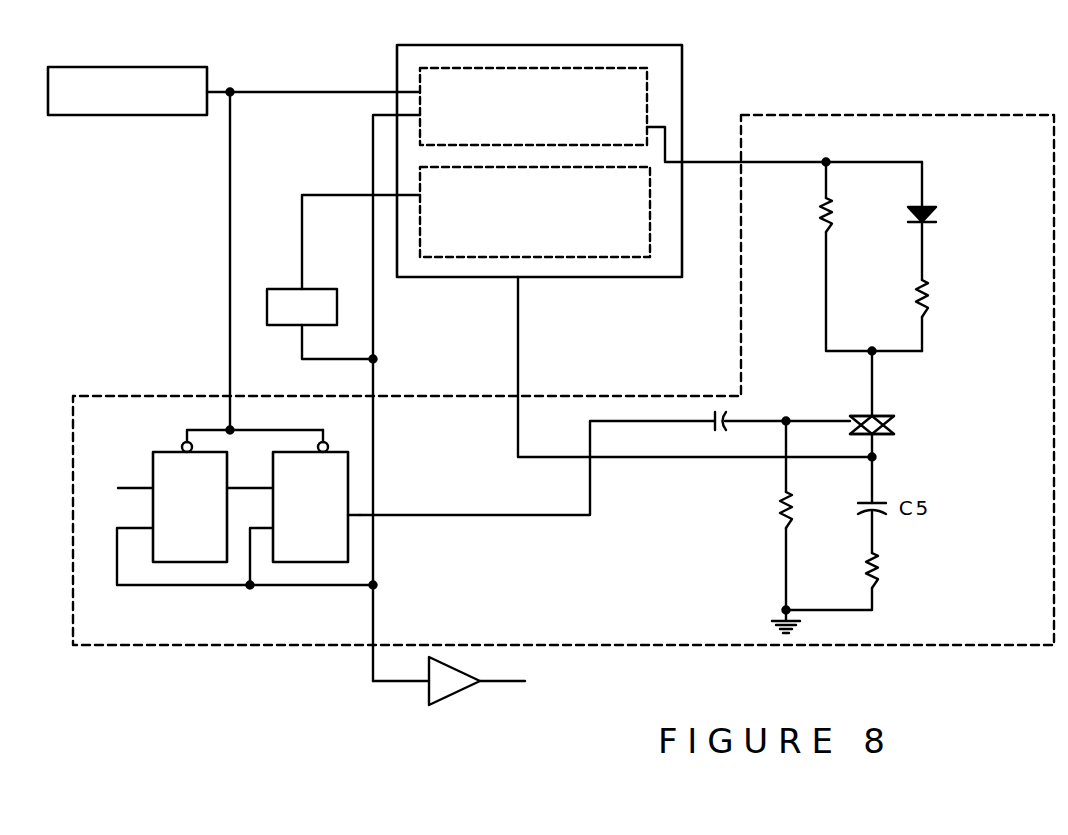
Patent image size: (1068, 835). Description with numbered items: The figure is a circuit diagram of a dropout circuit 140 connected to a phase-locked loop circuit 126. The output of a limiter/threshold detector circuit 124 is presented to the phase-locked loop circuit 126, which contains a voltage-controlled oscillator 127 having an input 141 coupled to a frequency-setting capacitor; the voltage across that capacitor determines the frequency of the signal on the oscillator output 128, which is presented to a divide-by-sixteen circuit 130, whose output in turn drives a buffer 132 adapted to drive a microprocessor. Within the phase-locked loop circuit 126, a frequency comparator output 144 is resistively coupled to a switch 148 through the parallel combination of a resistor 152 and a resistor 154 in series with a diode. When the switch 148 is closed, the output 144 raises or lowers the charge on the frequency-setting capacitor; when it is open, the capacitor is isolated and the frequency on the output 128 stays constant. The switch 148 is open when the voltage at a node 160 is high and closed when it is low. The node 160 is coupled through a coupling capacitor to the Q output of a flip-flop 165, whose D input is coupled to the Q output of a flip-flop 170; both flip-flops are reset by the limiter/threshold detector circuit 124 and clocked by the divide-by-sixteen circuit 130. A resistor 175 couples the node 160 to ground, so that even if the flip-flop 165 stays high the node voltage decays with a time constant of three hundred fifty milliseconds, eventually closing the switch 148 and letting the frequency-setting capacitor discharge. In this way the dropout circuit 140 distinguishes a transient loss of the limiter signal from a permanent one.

The limiter/threshold detector circuit 124 is at (234, 78).
The phase-locked loop circuit 126 is at (526, 349).
The voltage-controlled oscillator 127 is at (535, 212).
The voltage controlled oscillator output 128 is at (361, 231).
The divide-by-sixteen circuit 130 is at (320, 311).
The buffer 132 is at (492, 690).
The dropout circuit 140 is at (563, 380).
The input 141 is at (656, 367).
The frequency comparator output 144 is at (784, 146).
The switch 148 is at (896, 427).
The resistor 152 is at (840, 258).
The resistor 154 is at (928, 256).
The node 160 is at (605, 454).
The flip-flop 165 is at (305, 494).
The flip-flop 170 is at (231, 340).
The resistor 175 is at (762, 527).